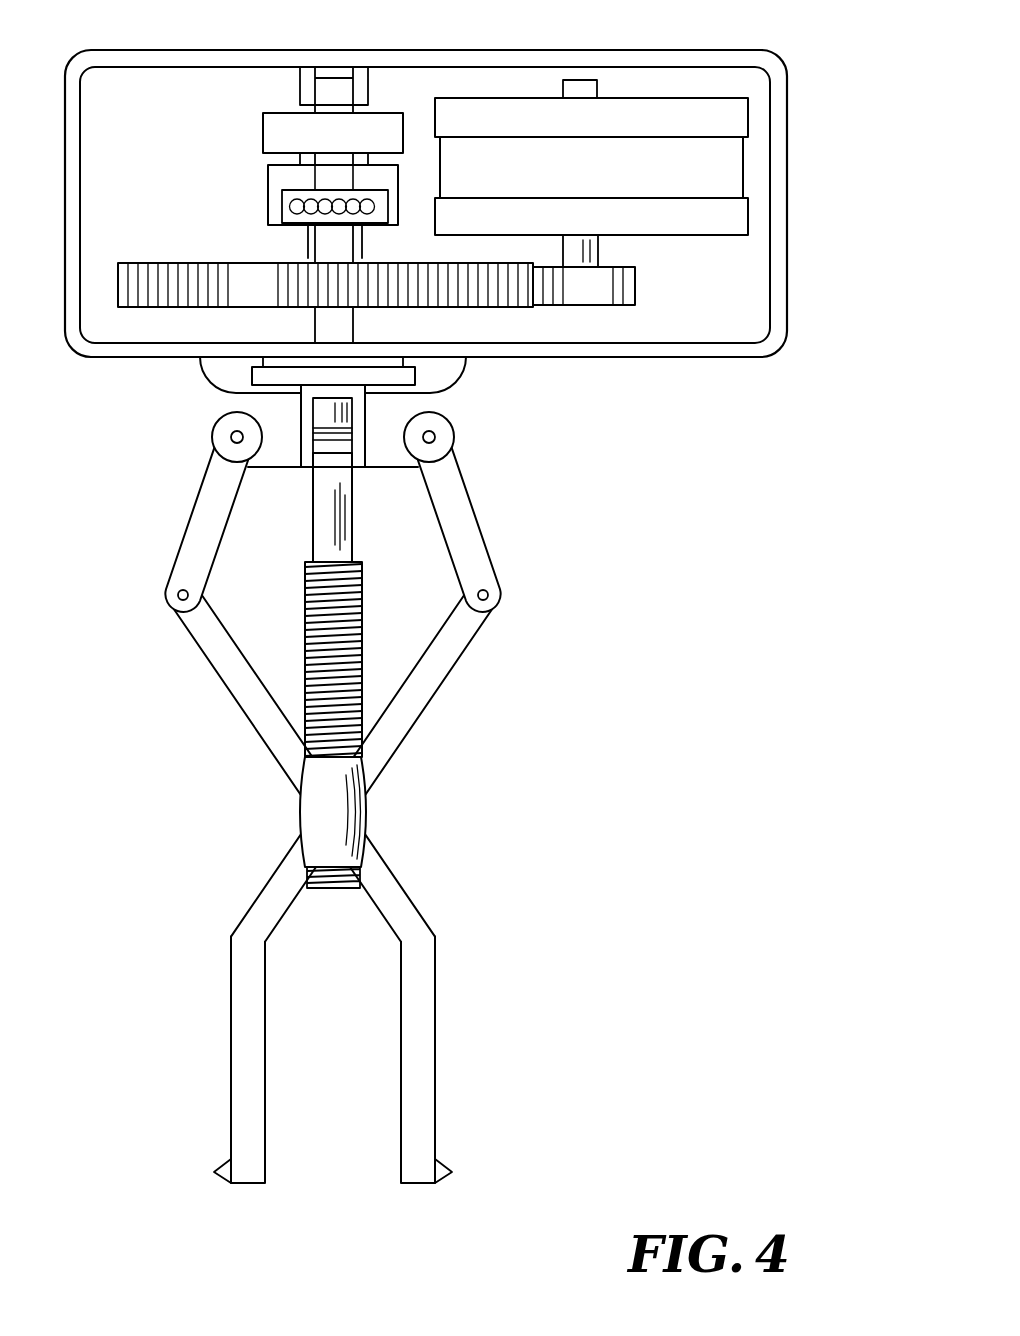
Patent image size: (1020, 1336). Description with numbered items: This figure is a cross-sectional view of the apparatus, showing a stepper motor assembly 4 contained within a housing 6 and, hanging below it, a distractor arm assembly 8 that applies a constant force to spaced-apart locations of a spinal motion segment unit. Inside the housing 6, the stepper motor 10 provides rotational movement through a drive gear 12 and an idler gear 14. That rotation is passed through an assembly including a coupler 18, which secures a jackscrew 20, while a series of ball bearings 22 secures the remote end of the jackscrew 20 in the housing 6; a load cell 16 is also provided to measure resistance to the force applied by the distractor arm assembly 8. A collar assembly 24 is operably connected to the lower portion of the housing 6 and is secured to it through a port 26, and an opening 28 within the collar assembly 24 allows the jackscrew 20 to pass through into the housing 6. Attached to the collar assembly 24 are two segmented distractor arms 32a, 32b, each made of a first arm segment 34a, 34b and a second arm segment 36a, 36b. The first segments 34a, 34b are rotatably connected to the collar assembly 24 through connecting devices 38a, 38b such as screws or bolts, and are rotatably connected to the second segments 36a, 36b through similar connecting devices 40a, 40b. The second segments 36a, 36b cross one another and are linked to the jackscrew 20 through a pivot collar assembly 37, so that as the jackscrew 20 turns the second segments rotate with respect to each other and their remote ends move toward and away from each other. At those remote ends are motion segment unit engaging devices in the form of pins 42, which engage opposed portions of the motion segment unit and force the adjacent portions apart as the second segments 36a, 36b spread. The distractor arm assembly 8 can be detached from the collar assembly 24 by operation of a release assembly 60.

The stepper motor assembly 4 is at (668, 77).
The housing 6 is at (784, 128).
The distractor arm assembly 8 is at (497, 505).
The stepper motor 10 is at (611, 178).
The drive gear 12 is at (600, 300).
The idler gear 14 is at (266, 296).
The load cell 16 is at (348, 141).
The coupler 18 is at (268, 212).
The jackscrew 20 is at (352, 537).
The ball bearings 22 is at (368, 226).
The collar assembly 24 is at (472, 416).
The port 26 is at (443, 377).
The opening 28 is at (360, 424).
The distractor arm 32a is at (510, 561).
The distractor arm 32b is at (158, 528).
The first arm segment 34a is at (484, 538).
The first arm segment 34b is at (170, 581).
The second arm segment 36a is at (445, 697).
The second arm segment 36b is at (260, 718).
The pivot collar assembly 37 is at (372, 811).
The connecting device 38a is at (441, 434).
The connecting device 38b is at (233, 420).
The connecting device 40a is at (503, 602).
The connecting device 40b is at (168, 602).
The pins 42 is at (228, 1172).
The release assembly 60 is at (333, 446).